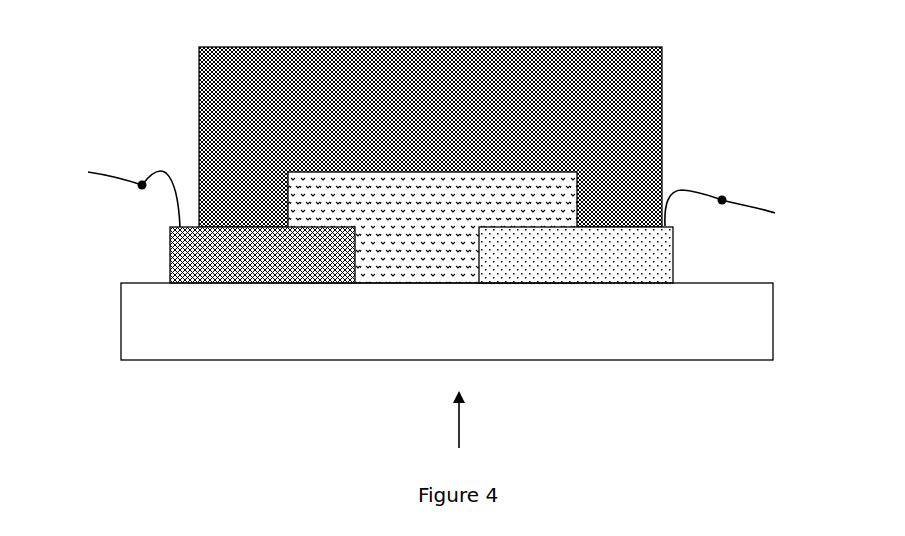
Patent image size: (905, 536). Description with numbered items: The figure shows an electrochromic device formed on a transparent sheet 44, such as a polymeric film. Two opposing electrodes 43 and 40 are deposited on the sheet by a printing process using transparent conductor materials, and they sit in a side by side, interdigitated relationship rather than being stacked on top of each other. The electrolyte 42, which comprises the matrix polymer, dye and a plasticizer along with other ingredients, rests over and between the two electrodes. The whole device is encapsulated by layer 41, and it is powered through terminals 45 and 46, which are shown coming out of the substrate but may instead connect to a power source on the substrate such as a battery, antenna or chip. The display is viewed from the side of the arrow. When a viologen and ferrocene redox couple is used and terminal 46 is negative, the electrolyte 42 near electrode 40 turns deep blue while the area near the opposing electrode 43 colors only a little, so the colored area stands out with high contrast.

The electrode 40 is at (587, 262).
The encapsulating layer 41 is at (570, 93).
The electrolyte 42 is at (547, 203).
The opposing electrode 43 is at (187, 260).
The transparent sheet 44 is at (180, 325).
The terminal 45 is at (109, 194).
The terminal 46 is at (742, 213).